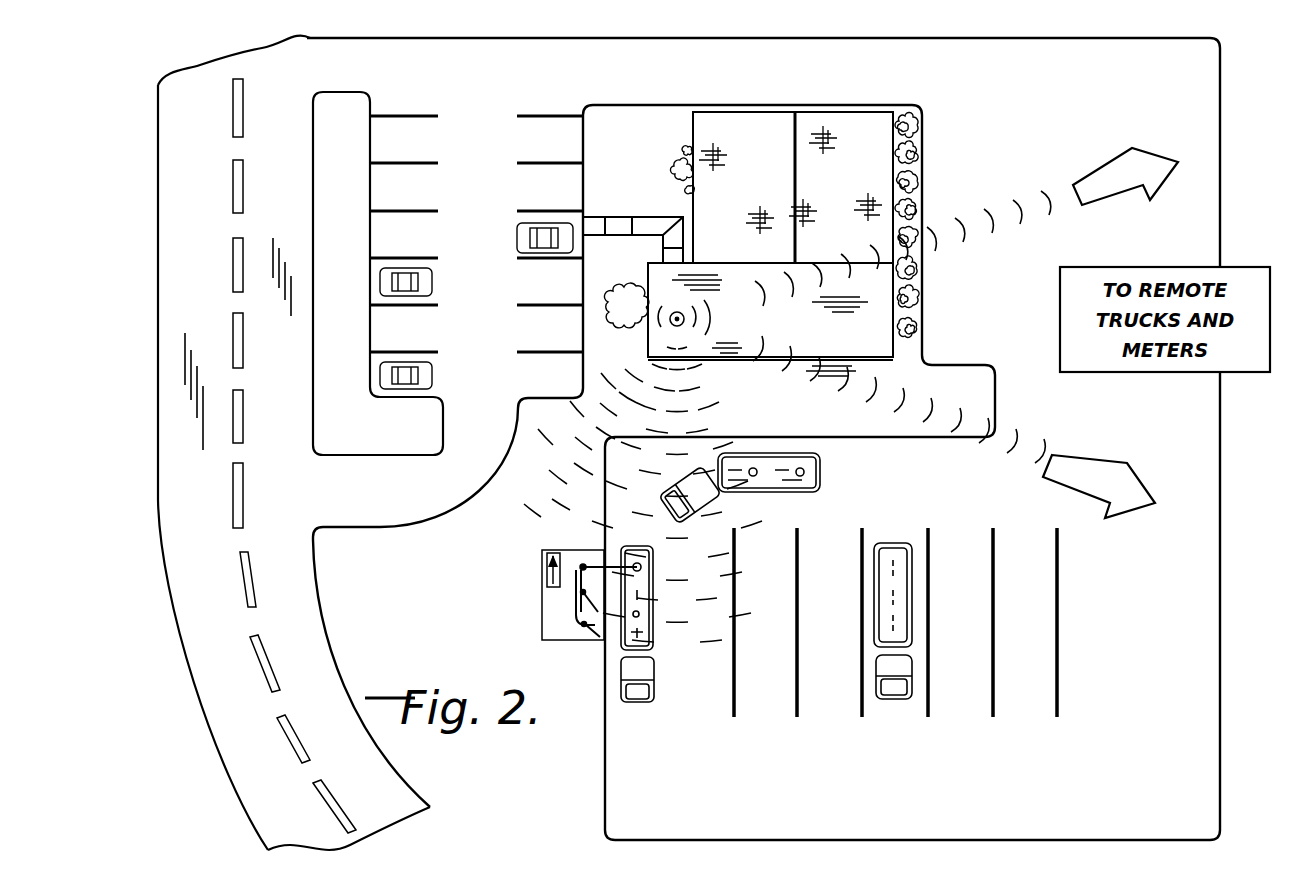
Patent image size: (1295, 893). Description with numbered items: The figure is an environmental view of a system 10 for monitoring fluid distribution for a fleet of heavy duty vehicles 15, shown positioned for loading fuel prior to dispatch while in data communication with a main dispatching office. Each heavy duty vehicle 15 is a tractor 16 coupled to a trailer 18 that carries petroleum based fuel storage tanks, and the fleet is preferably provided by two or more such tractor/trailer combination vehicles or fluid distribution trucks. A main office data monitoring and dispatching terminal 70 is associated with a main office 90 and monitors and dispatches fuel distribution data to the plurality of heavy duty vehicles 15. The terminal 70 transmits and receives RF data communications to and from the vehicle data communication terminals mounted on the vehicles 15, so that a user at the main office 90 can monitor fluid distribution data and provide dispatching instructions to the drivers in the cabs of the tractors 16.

The system 10 is at (560, 466).
The heavy duty vehicle 15 is at (761, 508).
The tractor 16 is at (680, 507).
The trailer 18 is at (790, 484).
The main office data monitoring and dispatching terminal 70 is at (669, 325).
The main office 90 is at (806, 345).